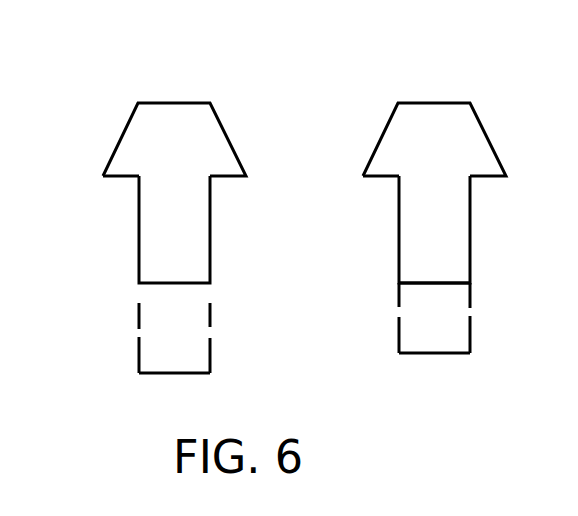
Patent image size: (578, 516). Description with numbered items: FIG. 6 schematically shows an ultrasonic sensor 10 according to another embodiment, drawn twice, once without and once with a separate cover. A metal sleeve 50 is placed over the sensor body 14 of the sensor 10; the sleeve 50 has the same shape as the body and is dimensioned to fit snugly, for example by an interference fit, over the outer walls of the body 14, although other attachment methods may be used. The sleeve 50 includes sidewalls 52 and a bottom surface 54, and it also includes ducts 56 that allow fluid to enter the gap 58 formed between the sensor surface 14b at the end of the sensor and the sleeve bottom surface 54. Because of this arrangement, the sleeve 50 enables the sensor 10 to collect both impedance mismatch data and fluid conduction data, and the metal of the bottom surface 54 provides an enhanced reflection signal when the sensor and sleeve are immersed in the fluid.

The sensor 10 is at (250, 135).
The sensor body 14 is at (210, 227).
The sensor surface 14b is at (424, 275).
The metal sleeve 50 is at (211, 351).
The sidewalls 52 is at (127, 318).
The bottom surface 54 is at (147, 378).
The ducts 56 is at (222, 325).
The gap 58 is at (442, 340).